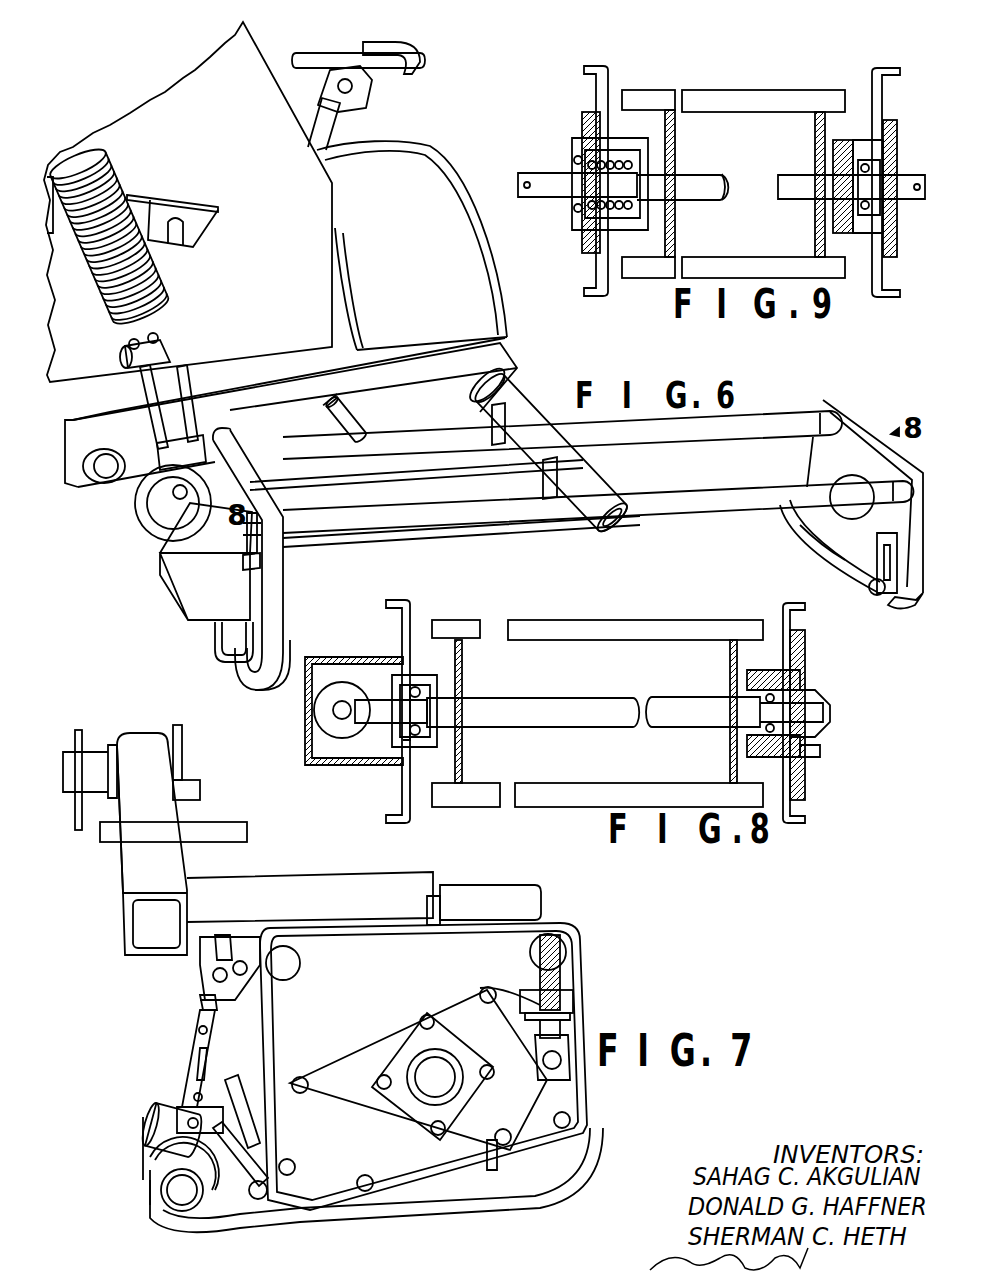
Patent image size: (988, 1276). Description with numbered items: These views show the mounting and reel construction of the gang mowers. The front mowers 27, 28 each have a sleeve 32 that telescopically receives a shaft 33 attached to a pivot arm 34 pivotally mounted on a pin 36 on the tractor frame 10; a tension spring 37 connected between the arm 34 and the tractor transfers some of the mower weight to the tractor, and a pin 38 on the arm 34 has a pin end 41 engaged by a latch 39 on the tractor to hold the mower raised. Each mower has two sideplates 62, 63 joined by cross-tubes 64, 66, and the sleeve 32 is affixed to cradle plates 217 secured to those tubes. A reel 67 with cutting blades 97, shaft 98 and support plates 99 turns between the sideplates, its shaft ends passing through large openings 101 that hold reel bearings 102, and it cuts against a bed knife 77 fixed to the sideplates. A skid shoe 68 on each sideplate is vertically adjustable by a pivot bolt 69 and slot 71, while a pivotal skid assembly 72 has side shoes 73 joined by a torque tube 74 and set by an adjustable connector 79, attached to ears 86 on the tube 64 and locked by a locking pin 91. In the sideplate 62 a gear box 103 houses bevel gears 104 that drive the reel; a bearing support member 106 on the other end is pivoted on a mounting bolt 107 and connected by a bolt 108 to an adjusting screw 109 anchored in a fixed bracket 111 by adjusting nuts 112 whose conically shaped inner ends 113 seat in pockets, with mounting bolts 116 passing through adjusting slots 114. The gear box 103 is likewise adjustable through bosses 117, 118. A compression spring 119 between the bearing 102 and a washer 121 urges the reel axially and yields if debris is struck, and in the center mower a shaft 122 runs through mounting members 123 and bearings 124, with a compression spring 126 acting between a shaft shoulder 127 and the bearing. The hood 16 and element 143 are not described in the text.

In FIG. 6, the tractor frame 10 is at (188, 246).
In FIG. 7, the tractor frame 10 is at (97, 710).
In FIG. 6, the hood 16 is at (428, 245).
In FIG. 6, the front mower 27 is at (830, 382).
In FIG. 7, the right front mower 28 is at (582, 904).
In FIG. 6, the sleeve 32 is at (549, 444).
In FIG. 7, the sleeve 32 is at (364, 887).
In FIG. 6, the shaft 33 is at (626, 539).
In FIG. 6, the pivot arm 34 is at (291, 395).
In FIG. 7, the pivot arm 34 is at (137, 840).
In FIG. 6, the pin 36 is at (104, 489).
In FIG. 6, the tension spring 37 is at (131, 236).
In FIG. 6, the pin 38 is at (368, 416).
In FIG. 7, the pin 38 is at (185, 851).
In FIG. 6, the latch 39 is at (172, 203).
In FIG. 7, the pin end 41 is at (90, 803).
In FIG. 6, the sideplate 62 is at (276, 559).
In FIG. 9, the sideplate 62 is at (612, 168).
In FIG. 8, the sideplate 62 is at (418, 700).
In FIG. 7, the sideplate 62 is at (449, 1066).
In FIG. 6, the sideplate 63 is at (865, 494).
In FIG. 9, the sideplate 63 is at (894, 164).
In FIG. 8, the sideplate 63 is at (806, 738).
In FIG. 7, the sideplate 63 is at (202, 968).
In FIG. 6, the mower frame tube 64 is at (562, 418).
In FIG. 6, the mower frame tube 66 is at (598, 495).
In FIG. 9, the reel 67 is at (763, 82).
In FIG. 8, the reel 67 is at (635, 610).
In FIG. 6, the skid shoe 68 is at (258, 681).
In FIG. 7, the skid shoe 68 is at (376, 1193).
In FIG. 7, the pivot bolt 69 is at (409, 1155).
In FIG. 6, the slot 71 is at (868, 583).
In FIG. 7, the skid assembly 72 is at (158, 1163).
In FIG. 7, the side shoe 73 is at (153, 1177).
In FIG. 7, the torque tube 74 is at (169, 1101).
In FIG. 7, the bed knife 77 is at (240, 1115).
In FIG. 7, the adjustable connector 79 is at (216, 1058).
In FIG. 7, the ears 86 is at (231, 929).
In FIG. 7, the locking pin 91 is at (188, 1064).
In FIG. 9, the cutting blades 97 is at (658, 79).
In FIG. 8, the cutting blades 97 is at (504, 609).
In FIG. 8, the reel shaft 98 is at (589, 694).
In FIG. 8, the support plates 99 is at (481, 711).
In FIG. 6, the opening 101 is at (843, 485).
In FIG. 8, the opening 101 is at (376, 679).
In FIG. 8, the reel bearing 102 is at (591, 685).
In FIG. 8, the gear box 103 is at (354, 732).
In FIG. 8, the bevel gears 104 is at (314, 729).
In FIG. 8, the bearing support member 106 is at (828, 722).
In FIG. 7, the bearing support member 106 is at (433, 1093).
In FIG. 7, the mounting bolt 107 is at (414, 1070).
In FIG. 7, the bolt 108 is at (531, 1053).
In FIG. 6, the adjusting screw 109 is at (223, 543).
In FIG. 7, the adjusting screw 109 is at (591, 1013).
In FIG. 6, the fixed bracket 111 is at (206, 561).
In FIG. 7, the fixed bracket 111 is at (578, 985).
In FIG. 7, the adjusting nuts 112 is at (514, 972).
In FIG. 7, the conically shaped inner ends 113 is at (593, 994).
In FIG. 6, the adjusting slots 114 is at (823, 546).
In FIG. 7, the adjusting slots 114 is at (476, 1072).
In FIG. 7, the mounting bolts 116 is at (470, 1059).
In FIG. 6, the boss 117 is at (213, 651).
In FIG. 6, the boss 118 is at (290, 518).
In FIG. 8, the compression spring 119 is at (841, 762).
In FIG. 8, the washer 121 is at (840, 715).
In FIG. 9, the shaft 122 is at (721, 171).
In FIG. 9, the mounting members 123 is at (711, 154).
In FIG. 9, the bearings 124 is at (720, 154).
In FIG. 9, the compression spring 126 is at (624, 161).
In FIG. 9, the shaft shoulder 127 is at (682, 164).
In FIG. 6, the tube 143 is at (160, 522).
In FIG. 6, the cradle plates 217 is at (416, 456).